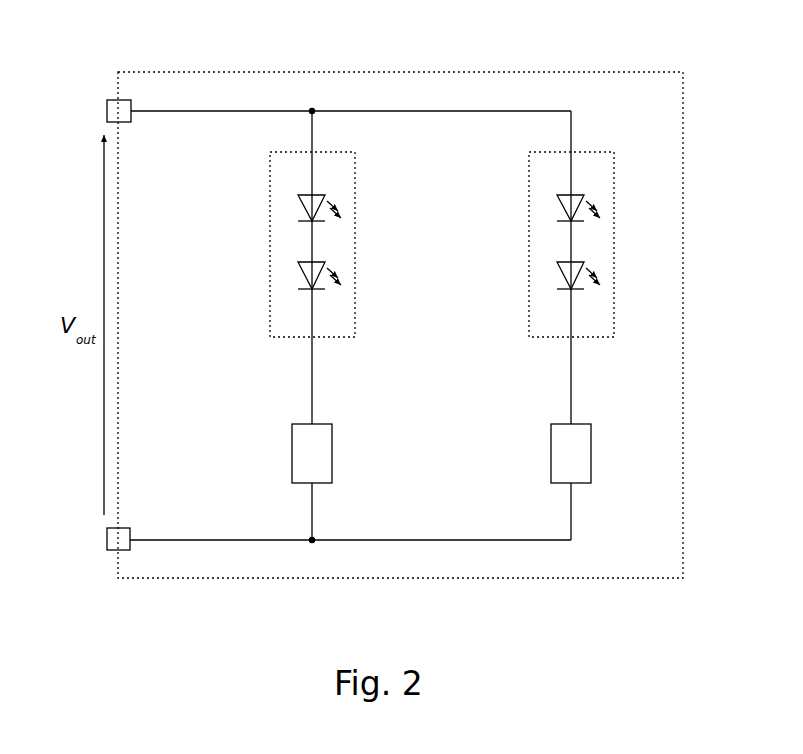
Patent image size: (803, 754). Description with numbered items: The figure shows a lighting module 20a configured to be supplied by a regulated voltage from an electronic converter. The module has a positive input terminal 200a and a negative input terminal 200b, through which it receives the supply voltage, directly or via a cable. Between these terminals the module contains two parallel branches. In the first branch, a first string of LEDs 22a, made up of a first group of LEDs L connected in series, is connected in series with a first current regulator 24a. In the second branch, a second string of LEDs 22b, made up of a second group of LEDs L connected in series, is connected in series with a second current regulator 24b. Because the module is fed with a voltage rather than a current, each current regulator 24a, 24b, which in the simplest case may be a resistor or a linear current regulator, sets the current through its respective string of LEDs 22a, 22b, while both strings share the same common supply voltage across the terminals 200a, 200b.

The lighting module 20a is at (555, 72).
The positive input terminal 200a is at (110, 98).
The negative input terminal 200b is at (110, 553).
The first string of LEDs 22a is at (288, 340).
The second string of LEDs 22b is at (547, 340).
The first current regulator 24a is at (318, 477).
The second current regulator 24b is at (577, 477).
The LED L is at (333, 186).